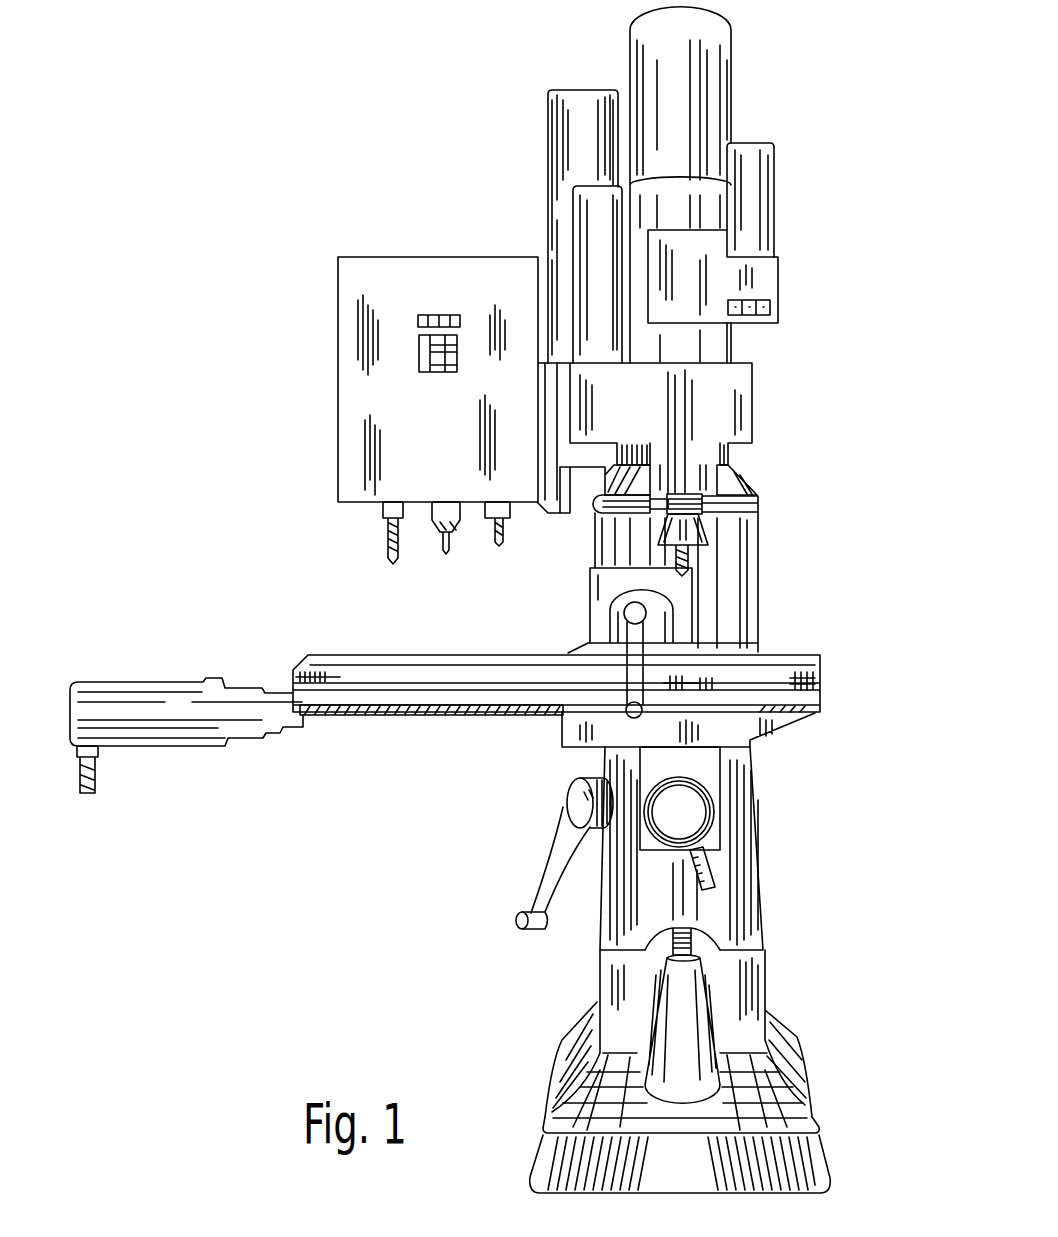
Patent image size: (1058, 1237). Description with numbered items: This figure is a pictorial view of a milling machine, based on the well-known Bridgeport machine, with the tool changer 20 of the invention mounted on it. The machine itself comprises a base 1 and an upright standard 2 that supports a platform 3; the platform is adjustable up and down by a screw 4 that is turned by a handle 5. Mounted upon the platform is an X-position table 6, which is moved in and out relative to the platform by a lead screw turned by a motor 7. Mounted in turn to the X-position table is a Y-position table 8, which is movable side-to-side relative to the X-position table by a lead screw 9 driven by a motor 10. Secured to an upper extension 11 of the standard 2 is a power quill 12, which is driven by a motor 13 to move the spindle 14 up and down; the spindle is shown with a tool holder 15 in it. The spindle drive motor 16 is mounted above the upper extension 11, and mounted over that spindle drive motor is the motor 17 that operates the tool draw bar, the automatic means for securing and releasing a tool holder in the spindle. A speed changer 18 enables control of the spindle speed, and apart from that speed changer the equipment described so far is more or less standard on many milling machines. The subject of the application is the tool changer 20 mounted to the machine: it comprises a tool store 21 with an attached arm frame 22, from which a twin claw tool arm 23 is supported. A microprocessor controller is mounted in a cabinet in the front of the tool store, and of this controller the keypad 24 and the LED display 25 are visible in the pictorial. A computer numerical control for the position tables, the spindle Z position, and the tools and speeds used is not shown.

The base 1 is at (810, 1073).
The standard 2 is at (740, 1000).
The platform 3 is at (745, 893).
The screw 4 is at (668, 940).
The handle 5 is at (515, 912).
The X-position table 6 is at (790, 722).
The motor 7 is at (695, 818).
The Y-position table 8 is at (390, 652).
The lead screw 9 is at (413, 712).
The motor 10 is at (168, 682).
The upper extension 11 is at (740, 587).
The power quill 12 is at (730, 393).
The motor 13 is at (578, 205).
The spindle 14 is at (757, 505).
The tool holder 15 is at (380, 516).
The spindle drive motor 16 is at (700, 212).
The motor 17 is at (716, 70).
The speed changer 18 is at (763, 287).
The tool changer 20 is at (405, 321).
The tool store 21 is at (348, 471).
The arm frame 22 is at (562, 110).
The twin claw tool arm 23 is at (553, 512).
The keypad 24 is at (432, 372).
The LED display 25 is at (452, 314).